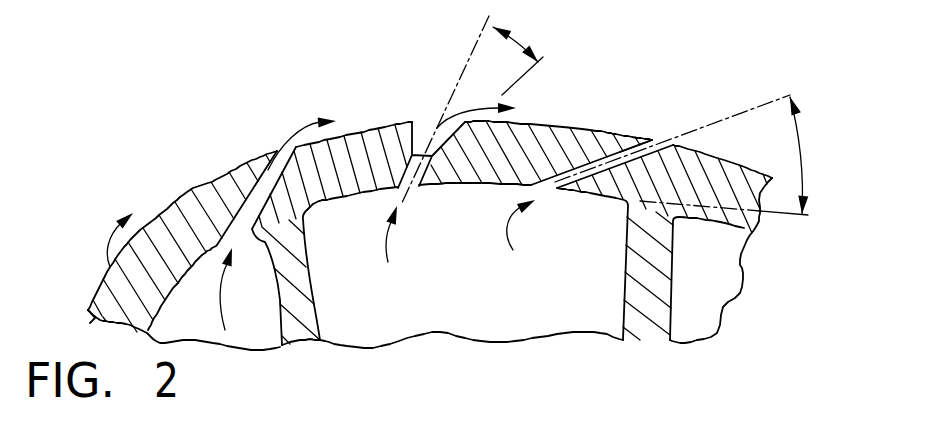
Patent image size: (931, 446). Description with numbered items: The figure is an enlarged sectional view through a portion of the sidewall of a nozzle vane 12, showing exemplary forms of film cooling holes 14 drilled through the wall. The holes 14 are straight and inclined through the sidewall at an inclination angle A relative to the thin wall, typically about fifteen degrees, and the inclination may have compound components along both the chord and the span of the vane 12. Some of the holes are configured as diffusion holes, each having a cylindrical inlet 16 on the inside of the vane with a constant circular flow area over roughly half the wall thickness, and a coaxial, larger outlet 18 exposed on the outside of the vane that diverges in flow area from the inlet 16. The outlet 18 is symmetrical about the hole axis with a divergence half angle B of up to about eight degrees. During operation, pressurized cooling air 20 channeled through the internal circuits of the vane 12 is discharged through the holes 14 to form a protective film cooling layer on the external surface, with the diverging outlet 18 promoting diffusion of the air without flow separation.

The nozzle vane 12 is at (486, 287).
The film cooling hole 14 is at (384, 152).
The cylindrical inlet 16 is at (582, 188).
The diverging outlet 18 is at (622, 146).
The pressurized cooling air 20 is at (403, 273).
The inclination angle A is at (804, 150).
The divergence angle B is at (519, 33).